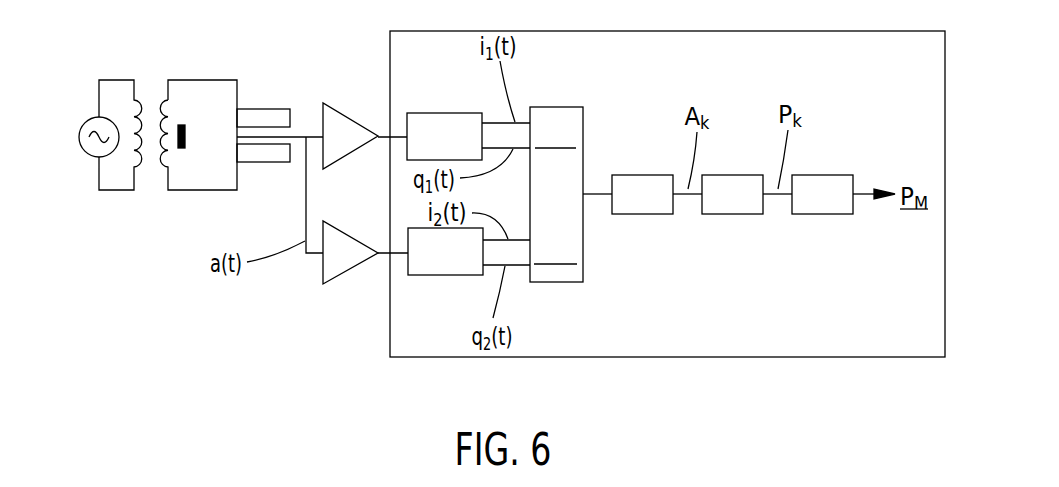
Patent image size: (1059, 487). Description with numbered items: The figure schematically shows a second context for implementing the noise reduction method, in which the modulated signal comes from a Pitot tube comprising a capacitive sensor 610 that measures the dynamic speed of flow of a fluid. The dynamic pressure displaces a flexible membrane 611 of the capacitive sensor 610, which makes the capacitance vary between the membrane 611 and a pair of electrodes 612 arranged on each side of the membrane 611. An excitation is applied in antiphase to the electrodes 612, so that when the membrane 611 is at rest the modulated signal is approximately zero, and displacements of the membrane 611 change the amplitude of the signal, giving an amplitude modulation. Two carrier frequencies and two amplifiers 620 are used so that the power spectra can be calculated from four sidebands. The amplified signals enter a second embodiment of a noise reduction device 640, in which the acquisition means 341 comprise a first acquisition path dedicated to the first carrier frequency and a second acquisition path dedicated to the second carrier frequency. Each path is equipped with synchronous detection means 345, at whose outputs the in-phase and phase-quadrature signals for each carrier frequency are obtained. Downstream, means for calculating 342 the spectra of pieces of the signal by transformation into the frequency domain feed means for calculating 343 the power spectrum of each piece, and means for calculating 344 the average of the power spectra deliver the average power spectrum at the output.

The capacitive sensor 610 is at (222, 145).
The flexible membrane 611 is at (288, 136).
The electrodes 612 is at (267, 109).
The amplifiers 620 is at (326, 148).
The noise reduction device 640 is at (750, 358).
The synchronous detection means 345 is at (462, 149).
The acquisition means 341 is at (538, 207).
The means for calculating the spectra 342 is at (625, 207).
The means for calculating the power spectrum 343 is at (715, 207).
The means for calculating the average 344 is at (805, 207).